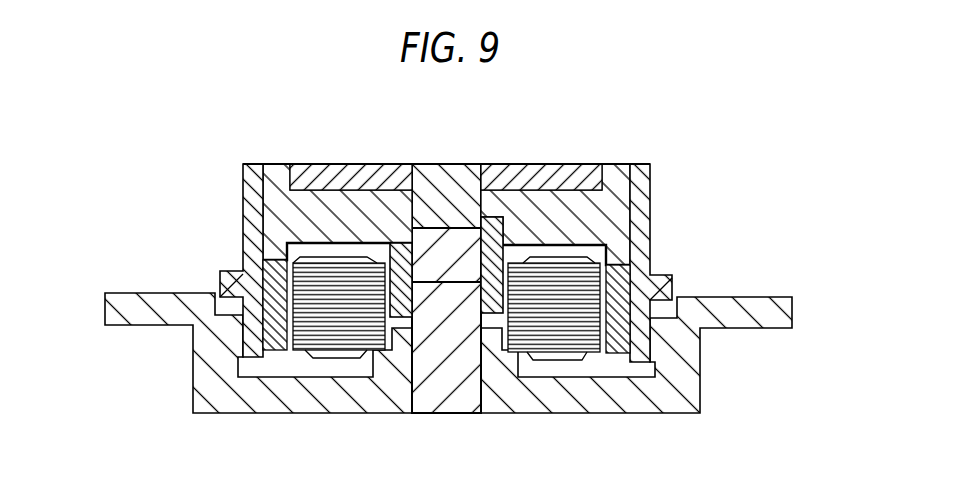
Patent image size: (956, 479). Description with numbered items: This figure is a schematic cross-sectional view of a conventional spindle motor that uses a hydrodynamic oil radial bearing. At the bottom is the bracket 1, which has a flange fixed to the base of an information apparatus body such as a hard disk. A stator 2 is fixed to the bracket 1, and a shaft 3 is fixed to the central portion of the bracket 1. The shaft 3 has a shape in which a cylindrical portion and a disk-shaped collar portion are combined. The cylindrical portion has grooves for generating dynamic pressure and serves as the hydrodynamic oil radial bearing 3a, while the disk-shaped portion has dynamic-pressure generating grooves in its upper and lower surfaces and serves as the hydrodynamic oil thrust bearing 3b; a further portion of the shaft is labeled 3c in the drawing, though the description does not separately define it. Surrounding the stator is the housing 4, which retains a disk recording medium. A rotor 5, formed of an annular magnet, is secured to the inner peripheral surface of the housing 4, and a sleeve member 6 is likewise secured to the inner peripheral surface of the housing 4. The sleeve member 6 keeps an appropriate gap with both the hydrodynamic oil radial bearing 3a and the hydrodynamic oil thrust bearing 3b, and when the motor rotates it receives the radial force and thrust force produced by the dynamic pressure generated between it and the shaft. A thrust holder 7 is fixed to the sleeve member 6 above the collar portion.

The bracket 1 is at (647, 410).
The stator 2 is at (549, 343).
The shaft 3 is at (428, 410).
The hydrodynamic oil radial bearing 3a is at (443, 256).
The hydrodynamic oil thrust bearing 3b is at (503, 178).
The hub boss 3c is at (480, 299).
The housing 4 is at (646, 252).
The rotor 5 is at (614, 353).
The sleeve member 6 is at (624, 210).
The thrust holder 7 is at (560, 172).